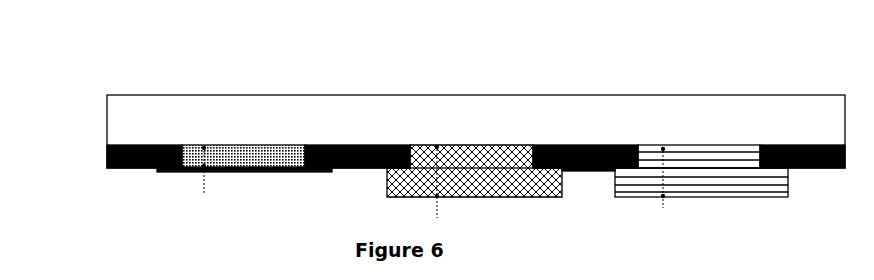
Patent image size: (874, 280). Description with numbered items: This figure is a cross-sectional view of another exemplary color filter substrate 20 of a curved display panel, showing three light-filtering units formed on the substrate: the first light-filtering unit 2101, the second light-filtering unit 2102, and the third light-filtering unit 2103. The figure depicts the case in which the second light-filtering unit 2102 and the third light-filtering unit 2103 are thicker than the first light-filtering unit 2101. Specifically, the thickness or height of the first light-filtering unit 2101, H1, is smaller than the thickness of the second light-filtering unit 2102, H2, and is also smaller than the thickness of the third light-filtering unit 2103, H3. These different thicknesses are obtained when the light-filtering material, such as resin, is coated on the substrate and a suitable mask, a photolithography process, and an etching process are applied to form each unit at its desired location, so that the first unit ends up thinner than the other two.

The color filter substrate 20 is at (91, 95).
The first light-filtering unit 2101 is at (292, 144).
The second light-filtering unit 2102 is at (520, 145).
The third light-filtering unit 2103 is at (737, 168).
The thickness of the first light-filtering unit H1 is at (215, 171).
The thickness of the second light-filtering unit H2 is at (447, 182).
The thickness of the third light-filtering unit H3 is at (673, 179).